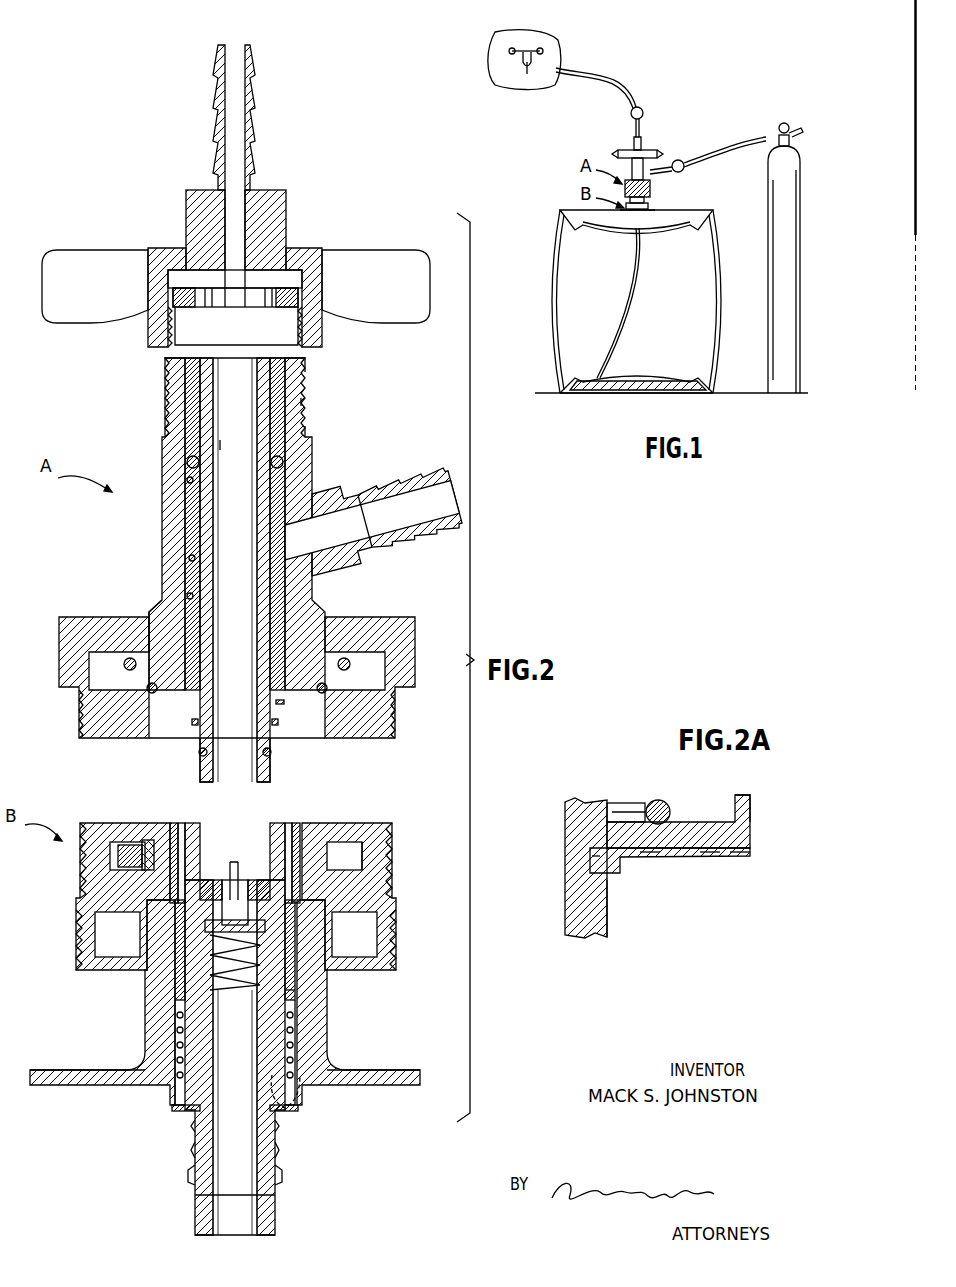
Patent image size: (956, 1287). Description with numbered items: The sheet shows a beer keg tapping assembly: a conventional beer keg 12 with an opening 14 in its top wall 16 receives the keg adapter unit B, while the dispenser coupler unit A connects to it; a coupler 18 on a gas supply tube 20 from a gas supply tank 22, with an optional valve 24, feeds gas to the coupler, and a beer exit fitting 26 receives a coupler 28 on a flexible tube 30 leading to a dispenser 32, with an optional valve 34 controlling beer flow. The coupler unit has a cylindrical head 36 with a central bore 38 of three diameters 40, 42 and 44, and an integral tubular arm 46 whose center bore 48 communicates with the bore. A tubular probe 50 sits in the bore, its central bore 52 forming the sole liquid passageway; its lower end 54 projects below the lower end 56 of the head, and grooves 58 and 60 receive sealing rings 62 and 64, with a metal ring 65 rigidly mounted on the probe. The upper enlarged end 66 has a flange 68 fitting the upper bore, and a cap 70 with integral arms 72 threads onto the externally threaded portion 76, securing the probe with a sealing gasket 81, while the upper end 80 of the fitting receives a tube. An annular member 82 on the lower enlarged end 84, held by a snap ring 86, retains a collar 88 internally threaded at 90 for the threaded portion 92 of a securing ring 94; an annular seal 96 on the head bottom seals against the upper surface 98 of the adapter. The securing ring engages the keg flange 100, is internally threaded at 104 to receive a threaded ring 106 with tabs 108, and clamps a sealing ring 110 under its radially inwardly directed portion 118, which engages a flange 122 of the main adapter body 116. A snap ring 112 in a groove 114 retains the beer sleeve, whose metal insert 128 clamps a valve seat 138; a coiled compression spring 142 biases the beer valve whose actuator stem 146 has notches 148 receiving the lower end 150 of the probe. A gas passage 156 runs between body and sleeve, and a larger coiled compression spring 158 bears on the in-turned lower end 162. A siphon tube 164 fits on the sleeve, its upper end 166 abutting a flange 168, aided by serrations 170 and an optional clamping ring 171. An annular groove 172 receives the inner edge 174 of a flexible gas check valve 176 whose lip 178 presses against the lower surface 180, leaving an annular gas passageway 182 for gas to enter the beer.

In FIG. 1, the beer keg 12 is at (558, 238).
In FIG. 2, the opening 14 is at (296, 990).
In FIG. 1, the opening 14 is at (649, 210).
In FIG. 2, the top wall 16 is at (405, 1075).
In FIG. 1, the top wall 16 is at (688, 218).
In FIG. 1, the coupler 18 is at (648, 168).
In FIG. 1, the gas supply tube 20 is at (752, 139).
In FIG. 1, the gas supply tank 22 is at (772, 212).
In FIG. 1, the valve 24 is at (684, 170).
In FIG. 2, the beer exit fitting 26 is at (265, 205).
In FIG. 1, the coupler 28 is at (632, 153).
In FIG. 1, the flexible tube 30 is at (615, 72).
In FIG. 1, the dispenser 32 is at (553, 50).
In FIG. 1, the valve 34 is at (643, 110).
In FIG. 2, the head 36 is at (170, 520).
In FIG. 2, the bore 38 is at (190, 558).
In FIG. 2, the bore diameter 40 is at (166, 378).
In FIG. 2, the bore diameter 42 is at (188, 596).
In FIG. 2, the bore diameter 44 is at (262, 680).
In FIG. 2, the tubular arm 46 is at (386, 490).
In FIG. 2, the center bore 48 is at (412, 486).
In FIG. 2, the probe 50 is at (262, 512).
In FIG. 2, the central bore 52 is at (220, 445).
In FIG. 2, the lower end of probe 54 is at (270, 780).
In FIG. 2, the lower end of head 56 is at (322, 693).
In FIG. 2, the groove 58 is at (188, 480).
In FIG. 2, the groove 60 is at (270, 752).
In FIG. 2, the sealing ring 62 is at (200, 464).
In FIG. 2, the sealing ring 64 is at (200, 752).
In FIG. 2, the metal ring 65 is at (193, 722).
In FIG. 2, the upper enlarged end 66 is at (300, 402).
In FIG. 2, the flange 68 is at (305, 372).
In FIG. 2, the cap 70 is at (318, 258).
In FIG. 2, the arms 72 is at (108, 268).
In FIG. 2, the externally threaded portion 76 is at (305, 430).
In FIG. 2, the upper end of fixture 80 is at (255, 100).
In FIG. 2, the sealing gasket 81 is at (283, 305).
In FIG. 2, the annular member 82 is at (126, 667).
In FIG. 2, the lower enlarged end 84 is at (160, 620).
In FIG. 2, the snap ring 86 is at (148, 690).
In FIG. 2, the collar 88 is at (65, 642).
In FIG. 2, the internal threads 90 is at (84, 714).
In FIG. 2, the threaded portion 92 is at (385, 835).
In FIG. 2, the securing ring 94 is at (365, 870).
In FIG. 2, the annular seal 96 is at (283, 704).
In FIG. 2, the upper surface 98 is at (170, 826).
In FIG. 2, the keg flange 100 is at (315, 1005).
In FIG. 2, the internal threads 104 is at (92, 935).
In FIG. 2, the threaded ring 106 is at (375, 950).
In FIG. 2, the tabs 108 is at (118, 918).
In FIG. 2, the sealing ring 110 is at (330, 862).
In FIG. 2, the snap ring 112 is at (280, 835).
In FIG. 2, the groove 114 is at (182, 835).
In FIG. 2, the main adapter body 116 is at (128, 850).
In FIG. 2A, the main adapter body 116 is at (742, 810).
In FIG. 2, the radially inwardly directed portion 118 is at (142, 835).
In FIG. 2, the flange 122 is at (300, 835).
In FIG. 2, the metal insert 128 is at (200, 835).
In FIG. 2, the sealing ring and valve seat 138 is at (230, 868).
In FIG. 2, the coiled compression spring 142 is at (224, 996).
In FIG. 2, the actuator stem 146 is at (258, 890).
In FIG. 2, the notches 148 is at (240, 878).
In FIG. 2, the lower end of coupler probe 150 is at (210, 783).
In FIG. 2, the gas passage 156 is at (178, 975).
In FIG. 2A, the gas passage 156 is at (580, 828).
In FIG. 2, the coiled compression spring 158 is at (270, 1050).
In FIG. 2A, the coiled compression spring 158 is at (652, 801).
In FIG. 2, the in-turned lower end 162 is at (276, 1135).
In FIG. 2A, the in-turned lower end 162 is at (688, 832).
In FIG. 2, the siphon tube 164 is at (195, 1155).
In FIG. 1, the siphon tube 164 is at (627, 320).
In FIG. 2, the upper end of siphon tube 166 is at (195, 1130).
In FIG. 2A, the flange 168 is at (592, 922).
In FIG. 2, the serrations 170 is at (278, 1195).
In FIG. 2, the clamping ring 171 is at (190, 1182).
In FIG. 2A, the annular groove 172 is at (592, 860).
In FIG. 2A, the inner edge 174 is at (608, 870).
In FIG. 2, the gas check valve 176 is at (180, 1112).
In FIG. 2A, the gas check valve 176 is at (655, 856).
In FIG. 2A, the lip 178 is at (738, 856).
In FIG. 2A, the lower surface 180 is at (710, 856).
In FIG. 2A, the annular gas passageway 182 is at (610, 800).